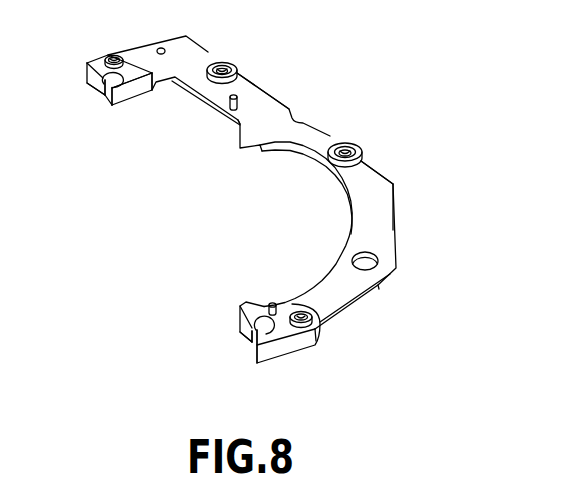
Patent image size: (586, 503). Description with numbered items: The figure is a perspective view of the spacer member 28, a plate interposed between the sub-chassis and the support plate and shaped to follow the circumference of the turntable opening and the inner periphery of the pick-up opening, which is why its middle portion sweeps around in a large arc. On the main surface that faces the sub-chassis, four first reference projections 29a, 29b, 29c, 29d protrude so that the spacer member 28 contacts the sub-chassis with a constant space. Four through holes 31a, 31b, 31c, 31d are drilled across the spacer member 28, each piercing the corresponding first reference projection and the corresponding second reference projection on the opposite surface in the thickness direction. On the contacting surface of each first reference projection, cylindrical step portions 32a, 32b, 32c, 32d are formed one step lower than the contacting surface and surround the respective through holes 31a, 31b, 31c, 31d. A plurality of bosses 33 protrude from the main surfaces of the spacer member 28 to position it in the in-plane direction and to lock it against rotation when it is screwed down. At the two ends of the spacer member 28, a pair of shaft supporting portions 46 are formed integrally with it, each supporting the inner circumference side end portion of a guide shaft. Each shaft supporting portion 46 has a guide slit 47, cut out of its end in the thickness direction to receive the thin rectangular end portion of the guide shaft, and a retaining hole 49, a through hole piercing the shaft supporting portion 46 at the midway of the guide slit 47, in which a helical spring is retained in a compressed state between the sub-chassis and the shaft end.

The spacer member 28 is at (358, 84).
The first reference projection 29a is at (290, 337).
The first reference projection 29b is at (363, 151).
The first reference projection 29c is at (236, 70).
The first reference projection 29d is at (128, 60).
The through hole 31a is at (318, 334).
The through hole 31b is at (391, 180).
The through hole 31c is at (248, 82).
The through hole 31d is at (137, 82).
The cylindrical step portion 32a is at (310, 320).
The cylindrical step portion 32b is at (348, 144).
The cylindrical step portion 32c is at (224, 64).
The cylindrical step portion 32d is at (106, 57).
The boss 33 is at (230, 107).
The shaft supporting portion 46 is at (93, 113).
The guide slit 47 is at (106, 102).
The retaining hole 49 is at (101, 82).